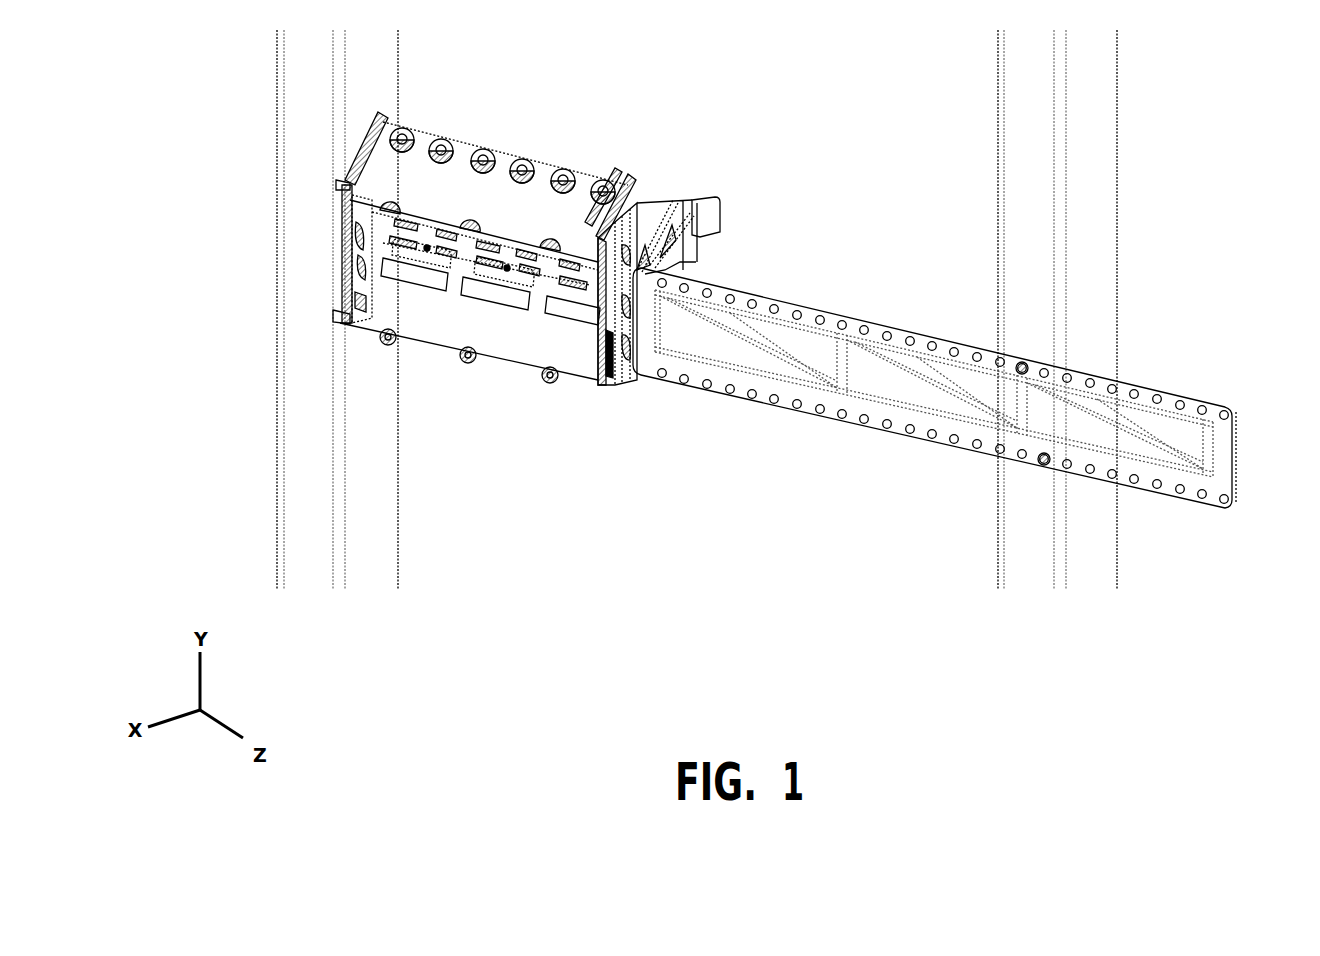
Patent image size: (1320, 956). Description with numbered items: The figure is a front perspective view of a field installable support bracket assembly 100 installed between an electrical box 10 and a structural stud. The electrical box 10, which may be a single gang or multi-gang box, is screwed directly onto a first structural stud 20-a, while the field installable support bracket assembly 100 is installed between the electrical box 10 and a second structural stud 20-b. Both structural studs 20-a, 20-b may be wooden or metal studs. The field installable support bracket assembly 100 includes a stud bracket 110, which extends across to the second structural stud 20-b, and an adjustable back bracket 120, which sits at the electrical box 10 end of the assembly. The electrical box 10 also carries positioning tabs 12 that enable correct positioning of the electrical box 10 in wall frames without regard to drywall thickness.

The electrical box 10 is at (560, 166).
The positioning tabs 12 is at (333, 305).
The first structural stud 20-a is at (398, 476).
The second structural stud 20-b is at (1117, 127).
The field installable support bracket assembly 100 is at (741, 254).
The stud bracket 110 is at (905, 405).
The adjustable back bracket 120 is at (644, 204).